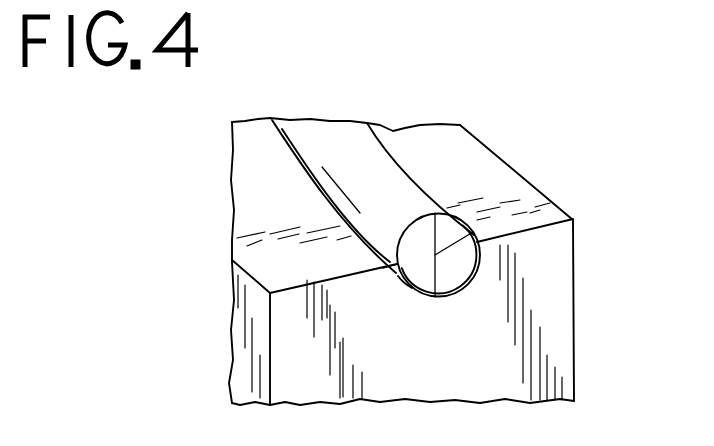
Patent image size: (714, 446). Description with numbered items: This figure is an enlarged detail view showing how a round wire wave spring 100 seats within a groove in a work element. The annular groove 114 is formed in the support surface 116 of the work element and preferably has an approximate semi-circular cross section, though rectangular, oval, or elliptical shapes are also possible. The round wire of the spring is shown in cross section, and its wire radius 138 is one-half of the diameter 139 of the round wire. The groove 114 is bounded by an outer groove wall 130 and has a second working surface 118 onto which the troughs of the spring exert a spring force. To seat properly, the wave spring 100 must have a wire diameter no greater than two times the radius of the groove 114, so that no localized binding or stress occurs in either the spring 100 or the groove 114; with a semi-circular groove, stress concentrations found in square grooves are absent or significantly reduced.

The round wire wave spring 100 is at (421, 192).
The annular groove 114 is at (472, 275).
The support surface 116 is at (574, 337).
The second working surface 118 is at (412, 288).
The outer groove wall 130 is at (398, 277).
The wire radius 138 is at (453, 248).
The diameter 139 is at (435, 297).